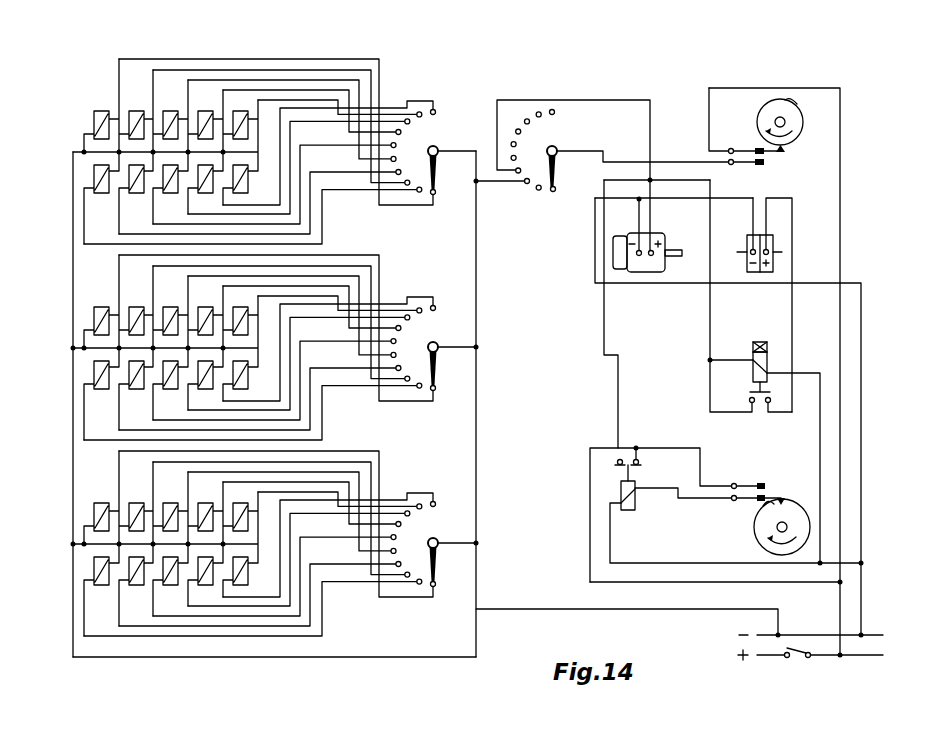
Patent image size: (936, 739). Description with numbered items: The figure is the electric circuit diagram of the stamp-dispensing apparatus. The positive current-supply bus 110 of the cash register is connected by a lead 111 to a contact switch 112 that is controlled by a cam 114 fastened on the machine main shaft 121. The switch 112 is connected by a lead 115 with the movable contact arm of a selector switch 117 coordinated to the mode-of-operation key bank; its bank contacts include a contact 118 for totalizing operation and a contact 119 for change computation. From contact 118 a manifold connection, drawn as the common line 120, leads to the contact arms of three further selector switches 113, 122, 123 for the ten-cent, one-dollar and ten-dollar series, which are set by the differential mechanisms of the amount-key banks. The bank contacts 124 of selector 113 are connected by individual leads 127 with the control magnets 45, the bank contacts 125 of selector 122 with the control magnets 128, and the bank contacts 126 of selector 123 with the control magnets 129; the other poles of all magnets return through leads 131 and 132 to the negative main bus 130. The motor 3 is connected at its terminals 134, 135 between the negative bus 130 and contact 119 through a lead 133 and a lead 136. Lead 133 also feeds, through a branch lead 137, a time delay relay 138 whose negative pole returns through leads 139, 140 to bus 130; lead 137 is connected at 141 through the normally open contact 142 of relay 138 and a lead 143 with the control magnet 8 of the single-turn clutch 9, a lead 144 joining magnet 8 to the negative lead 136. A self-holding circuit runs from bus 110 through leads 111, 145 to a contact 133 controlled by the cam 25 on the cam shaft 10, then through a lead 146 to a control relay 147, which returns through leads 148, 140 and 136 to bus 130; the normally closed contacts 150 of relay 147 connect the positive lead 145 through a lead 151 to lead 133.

The motor 3 is at (650, 259).
The control magnet 8 is at (780, 244).
The single-turn clutch 9 is at (774, 239).
The cam shaft 10 is at (770, 523).
The cam 25 is at (762, 533).
The control magnets 45 is at (93, 119).
The positive current-supply bus 110 is at (864, 658).
The lead 111 is at (841, 497).
The contact switch 112 is at (759, 166).
The selector switch 113 is at (436, 172).
The cam 114 is at (769, 126).
The lead 115 is at (668, 161).
The selector switch 117 is at (557, 177).
The contact 118 is at (527, 184).
The contact 119 is at (520, 167).
The common line 120 is at (479, 318).
The machine main shaft 121 is at (774, 122).
The selector switch 122 is at (437, 367).
The selector switch 123 is at (440, 558).
The bank contacts 124 is at (401, 167).
The bank contacts 125 is at (408, 377).
The bank contacts 126 is at (411, 568).
The leads 127 is at (313, 80).
The control magnets 128 is at (93, 314).
The control magnets 129 is at (93, 510).
The negative main bus 130 is at (799, 633).
The lead 131 is at (73, 433).
The lead 132 is at (666, 610).
The lead / contact 133 is at (567, 98).
The motor terminal 134 is at (652, 256).
The motor terminal 135 is at (640, 256).
The lead 136 is at (594, 254).
The branch lead 137 is at (710, 308).
The time delay relay 138 is at (755, 342).
The lead 139 is at (807, 372).
The lead 140 is at (853, 562).
The connection point 141 is at (733, 414).
The normally open contact 142 is at (758, 404).
The lead 143 is at (793, 320).
The lead 144 is at (725, 200).
The lead 145 is at (707, 583).
The lead 146 is at (697, 500).
The control relay 147 is at (627, 512).
The lead 148 is at (703, 561).
The normally closed contacts 150 is at (622, 459).
The lead 151 is at (605, 328).